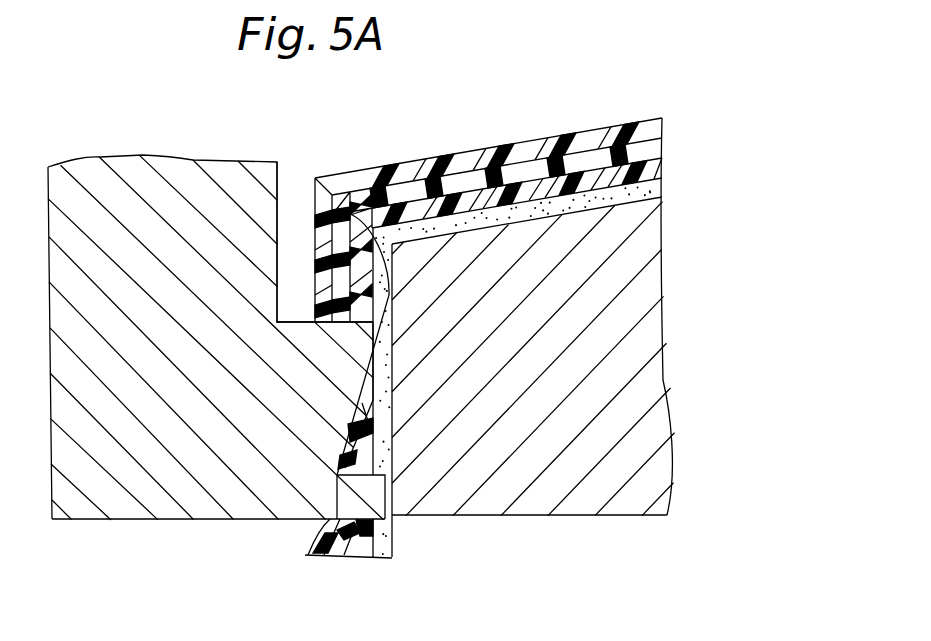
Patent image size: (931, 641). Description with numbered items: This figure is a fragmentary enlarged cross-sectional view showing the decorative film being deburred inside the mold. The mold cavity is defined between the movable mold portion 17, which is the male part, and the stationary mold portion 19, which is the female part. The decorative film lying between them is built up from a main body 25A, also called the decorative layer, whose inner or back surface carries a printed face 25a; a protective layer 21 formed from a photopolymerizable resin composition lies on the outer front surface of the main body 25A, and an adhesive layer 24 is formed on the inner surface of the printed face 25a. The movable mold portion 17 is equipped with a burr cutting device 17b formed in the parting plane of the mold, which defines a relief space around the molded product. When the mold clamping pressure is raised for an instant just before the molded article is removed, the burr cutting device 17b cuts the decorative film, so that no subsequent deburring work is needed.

The movable mold portion 17 is at (107, 487).
The burr cutting device 17b is at (313, 180).
The stationary mold portion 19 is at (547, 487).
The protective layer 21 is at (598, 200).
The adhesive layer 24 is at (403, 178).
The printed face 25a is at (352, 437).
The main body 25A is at (367, 453).